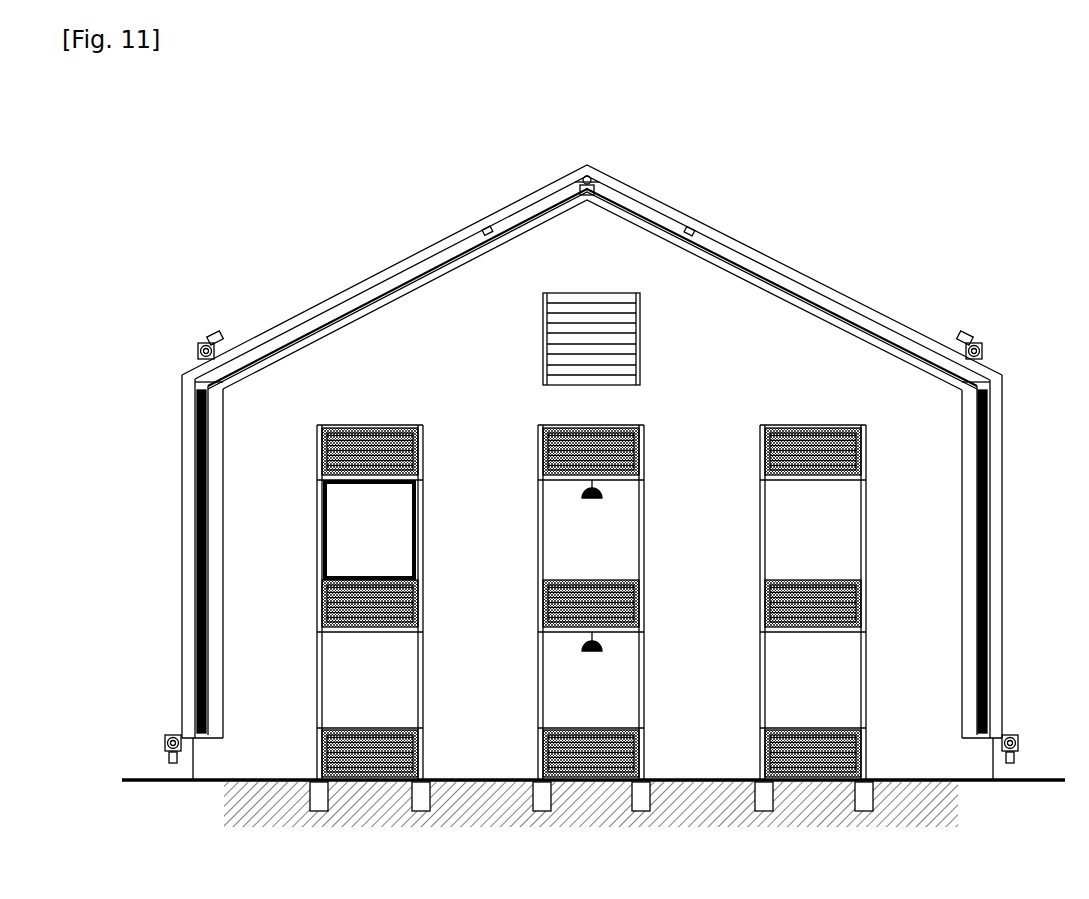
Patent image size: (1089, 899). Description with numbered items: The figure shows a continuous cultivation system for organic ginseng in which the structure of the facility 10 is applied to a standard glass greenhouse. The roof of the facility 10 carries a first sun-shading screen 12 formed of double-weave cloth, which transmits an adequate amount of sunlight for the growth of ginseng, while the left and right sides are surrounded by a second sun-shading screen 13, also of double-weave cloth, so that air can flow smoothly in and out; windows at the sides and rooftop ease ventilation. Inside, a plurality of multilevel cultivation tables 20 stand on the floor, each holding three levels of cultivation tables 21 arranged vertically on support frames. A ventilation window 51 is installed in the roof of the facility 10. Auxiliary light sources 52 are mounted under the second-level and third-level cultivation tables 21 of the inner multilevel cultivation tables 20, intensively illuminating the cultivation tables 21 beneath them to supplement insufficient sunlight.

The facility 10 is at (786, 288).
The first sun-shading screen 12 is at (433, 250).
The second sun-shading screen 13 is at (186, 535).
The multilevel cultivation table 20 is at (302, 511).
The cultivation table 21 is at (840, 452).
The ventilation window 51 is at (610, 312).
The auxiliary light source 52 is at (602, 493).